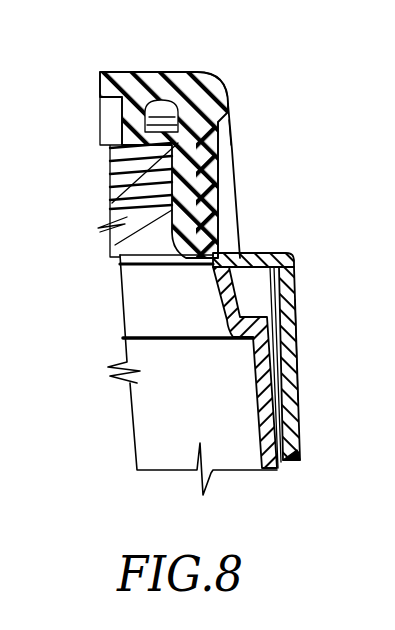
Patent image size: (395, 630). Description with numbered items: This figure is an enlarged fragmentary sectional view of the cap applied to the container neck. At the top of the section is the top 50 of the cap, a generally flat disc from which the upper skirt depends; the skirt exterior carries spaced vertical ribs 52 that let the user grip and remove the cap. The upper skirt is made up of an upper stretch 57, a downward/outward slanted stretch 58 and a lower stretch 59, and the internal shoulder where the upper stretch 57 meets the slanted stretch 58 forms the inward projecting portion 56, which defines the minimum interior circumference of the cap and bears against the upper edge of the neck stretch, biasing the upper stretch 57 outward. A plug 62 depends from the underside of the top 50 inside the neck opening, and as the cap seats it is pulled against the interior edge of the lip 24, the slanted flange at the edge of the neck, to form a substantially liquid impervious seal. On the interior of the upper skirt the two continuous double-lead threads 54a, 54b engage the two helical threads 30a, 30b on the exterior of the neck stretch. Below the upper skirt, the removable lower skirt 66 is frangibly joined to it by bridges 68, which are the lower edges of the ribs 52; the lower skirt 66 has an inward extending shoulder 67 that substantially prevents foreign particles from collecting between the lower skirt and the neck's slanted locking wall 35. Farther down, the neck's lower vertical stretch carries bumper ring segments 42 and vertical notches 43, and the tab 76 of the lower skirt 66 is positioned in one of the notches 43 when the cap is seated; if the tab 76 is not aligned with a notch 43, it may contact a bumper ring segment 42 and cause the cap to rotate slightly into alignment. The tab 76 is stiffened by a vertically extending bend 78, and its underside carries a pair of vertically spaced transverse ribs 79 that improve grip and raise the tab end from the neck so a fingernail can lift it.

The lip 24 is at (132, 137).
The thread 30a is at (118, 200).
The thread 30b is at (115, 245).
The locking wall 35 is at (217, 305).
The bumper ring segment 42 is at (297, 365).
The vertical notch 43 is at (257, 380).
The top 50 is at (110, 72).
The vertical rib 52 is at (207, 82).
The thread 54a is at (220, 152).
The thread 54b is at (218, 190).
The inward projecting portion 56 is at (155, 100).
The upper stretch 57 is at (197, 87).
The slanted stretch 58 is at (228, 126).
The lower stretch 59 is at (230, 134).
The plug 62 is at (105, 125).
The lower skirt 66 is at (293, 304).
The inward extending shoulder 67 is at (274, 254).
The bridge 68 is at (238, 253).
The tab 76 is at (292, 462).
The bend 78 is at (292, 426).
The transverse rib 79 is at (282, 407).